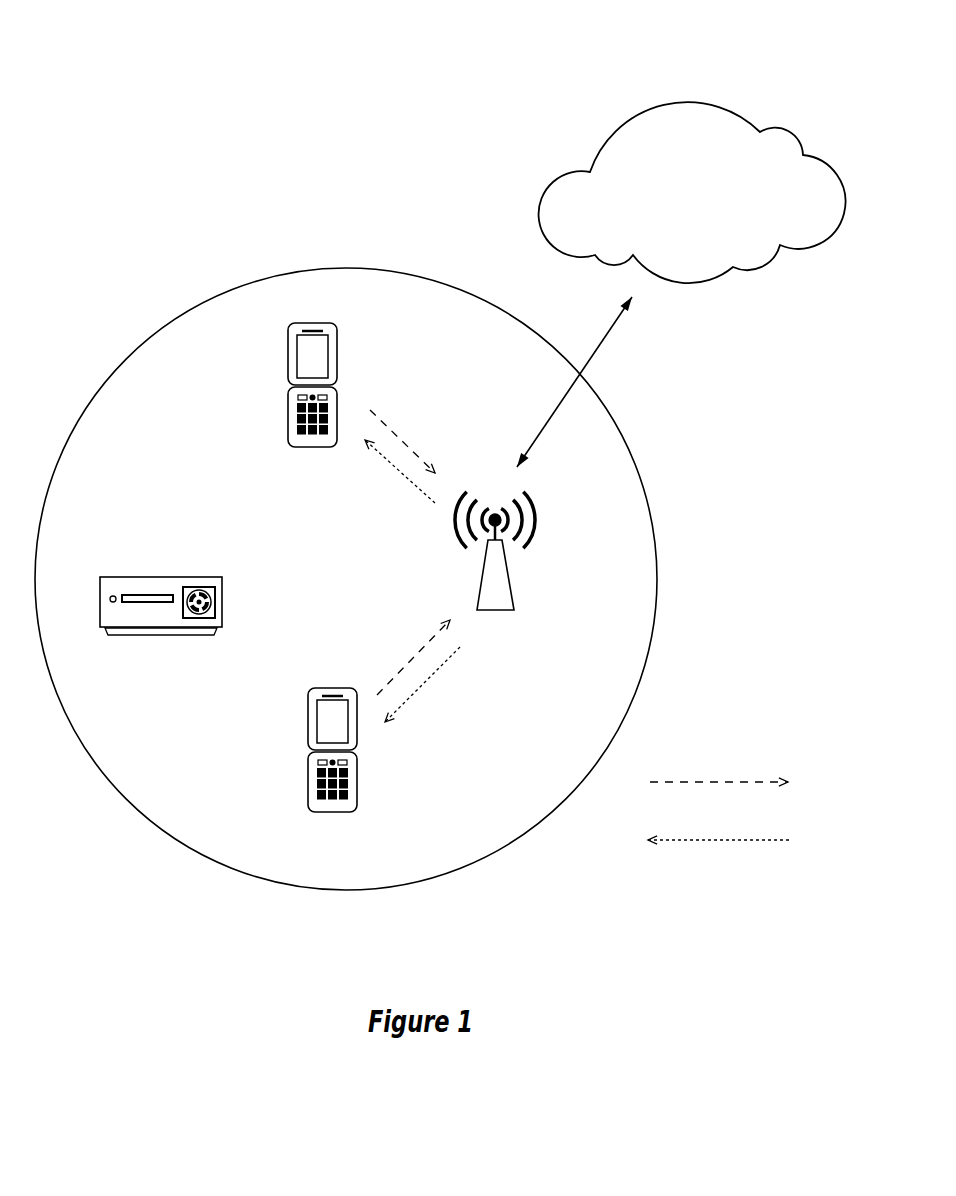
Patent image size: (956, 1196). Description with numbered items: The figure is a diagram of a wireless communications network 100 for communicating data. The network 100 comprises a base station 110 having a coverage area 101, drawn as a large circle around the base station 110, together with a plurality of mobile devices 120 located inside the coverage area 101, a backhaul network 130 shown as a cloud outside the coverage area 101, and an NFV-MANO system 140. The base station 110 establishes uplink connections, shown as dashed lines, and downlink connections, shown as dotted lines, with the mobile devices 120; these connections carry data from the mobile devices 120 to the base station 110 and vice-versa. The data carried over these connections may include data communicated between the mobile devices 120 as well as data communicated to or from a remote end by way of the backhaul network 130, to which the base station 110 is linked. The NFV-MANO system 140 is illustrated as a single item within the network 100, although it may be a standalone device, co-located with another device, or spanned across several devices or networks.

The network 100 is at (700, 41).
The coverage area 101 is at (136, 830).
The base station 110 is at (546, 584).
The mobile devices 120 is at (275, 418).
The backhaul network 130 is at (522, 221).
The NFV-MANO system 140 is at (233, 604).